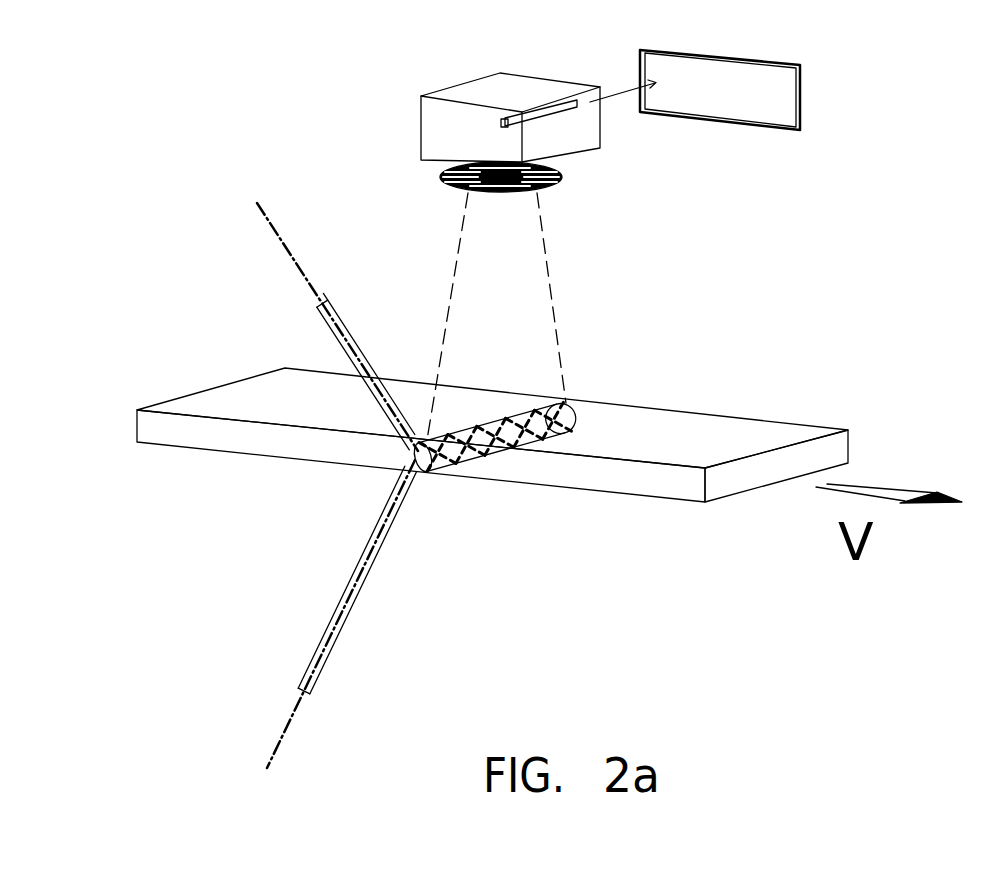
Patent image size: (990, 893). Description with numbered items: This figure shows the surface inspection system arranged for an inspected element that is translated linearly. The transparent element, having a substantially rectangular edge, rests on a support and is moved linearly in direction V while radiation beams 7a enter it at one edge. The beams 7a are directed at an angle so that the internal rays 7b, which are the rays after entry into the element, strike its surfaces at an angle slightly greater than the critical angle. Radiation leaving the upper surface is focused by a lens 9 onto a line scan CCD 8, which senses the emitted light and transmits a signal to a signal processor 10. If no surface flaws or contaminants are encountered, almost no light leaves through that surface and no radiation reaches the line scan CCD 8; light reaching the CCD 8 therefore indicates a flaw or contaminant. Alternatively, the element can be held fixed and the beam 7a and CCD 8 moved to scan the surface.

The radiation beams 7a is at (286, 485).
The internal rays 7b is at (589, 376).
The line scan CCD 8 is at (587, 123).
The lens 9 is at (590, 301).
The signal processor 10 is at (776, 111).